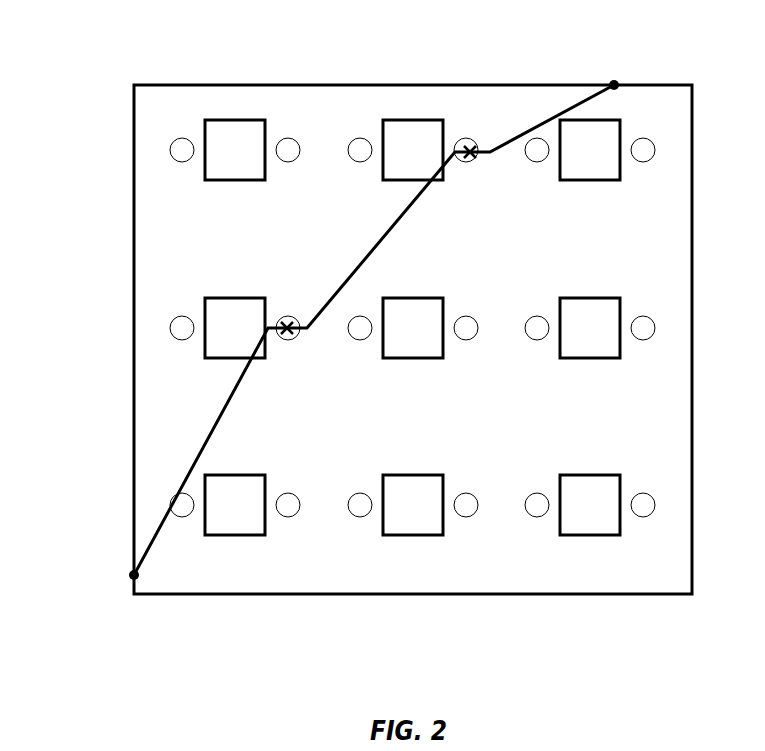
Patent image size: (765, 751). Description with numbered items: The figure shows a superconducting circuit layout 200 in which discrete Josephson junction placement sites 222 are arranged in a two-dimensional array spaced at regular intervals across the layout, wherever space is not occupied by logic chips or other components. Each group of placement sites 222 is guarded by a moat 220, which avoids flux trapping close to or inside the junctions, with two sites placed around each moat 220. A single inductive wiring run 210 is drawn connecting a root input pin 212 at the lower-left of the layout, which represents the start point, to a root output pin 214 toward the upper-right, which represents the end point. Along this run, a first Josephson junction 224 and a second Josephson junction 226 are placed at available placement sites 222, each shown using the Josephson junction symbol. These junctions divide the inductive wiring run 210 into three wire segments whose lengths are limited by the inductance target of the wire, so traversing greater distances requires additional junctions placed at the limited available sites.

The superconducting circuit layout 200 is at (204, 85).
The inductive wiring run 210 is at (218, 420).
The root input pin 212 is at (134, 574).
The root output pin 214 is at (614, 84).
The moat 220 is at (418, 475).
The Josephson junction placement site 222 is at (192, 317).
The first Josephson junction 224 is at (287, 321).
The second Josephson junction 226 is at (470, 146).